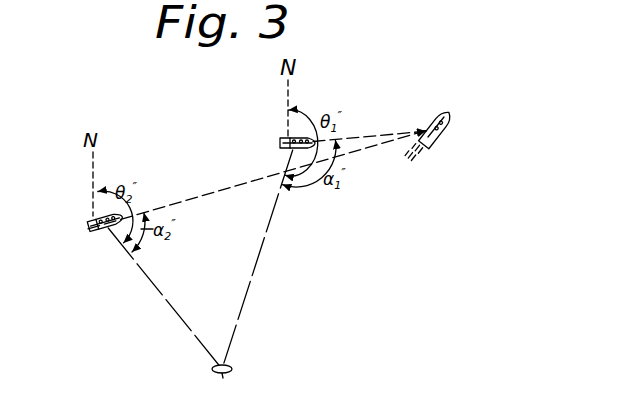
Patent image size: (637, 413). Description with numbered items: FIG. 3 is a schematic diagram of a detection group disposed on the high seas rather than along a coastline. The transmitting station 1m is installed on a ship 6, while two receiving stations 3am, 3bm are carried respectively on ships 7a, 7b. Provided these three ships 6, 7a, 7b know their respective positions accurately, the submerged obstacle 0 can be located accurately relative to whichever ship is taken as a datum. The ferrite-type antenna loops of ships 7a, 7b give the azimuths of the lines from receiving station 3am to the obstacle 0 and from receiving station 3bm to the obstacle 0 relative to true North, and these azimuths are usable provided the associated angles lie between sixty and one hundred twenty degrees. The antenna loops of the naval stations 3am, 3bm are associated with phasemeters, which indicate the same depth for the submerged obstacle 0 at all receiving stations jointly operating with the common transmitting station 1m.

The ship 7a is at (296, 149).
The ship 7b is at (97, 224).
The receiving station 3am is at (284, 137).
The receiving station 3bm is at (92, 221).
The ship 6 is at (443, 124).
The transmitting station 1m is at (430, 129).
The submerged obstacle 0 is at (224, 381).